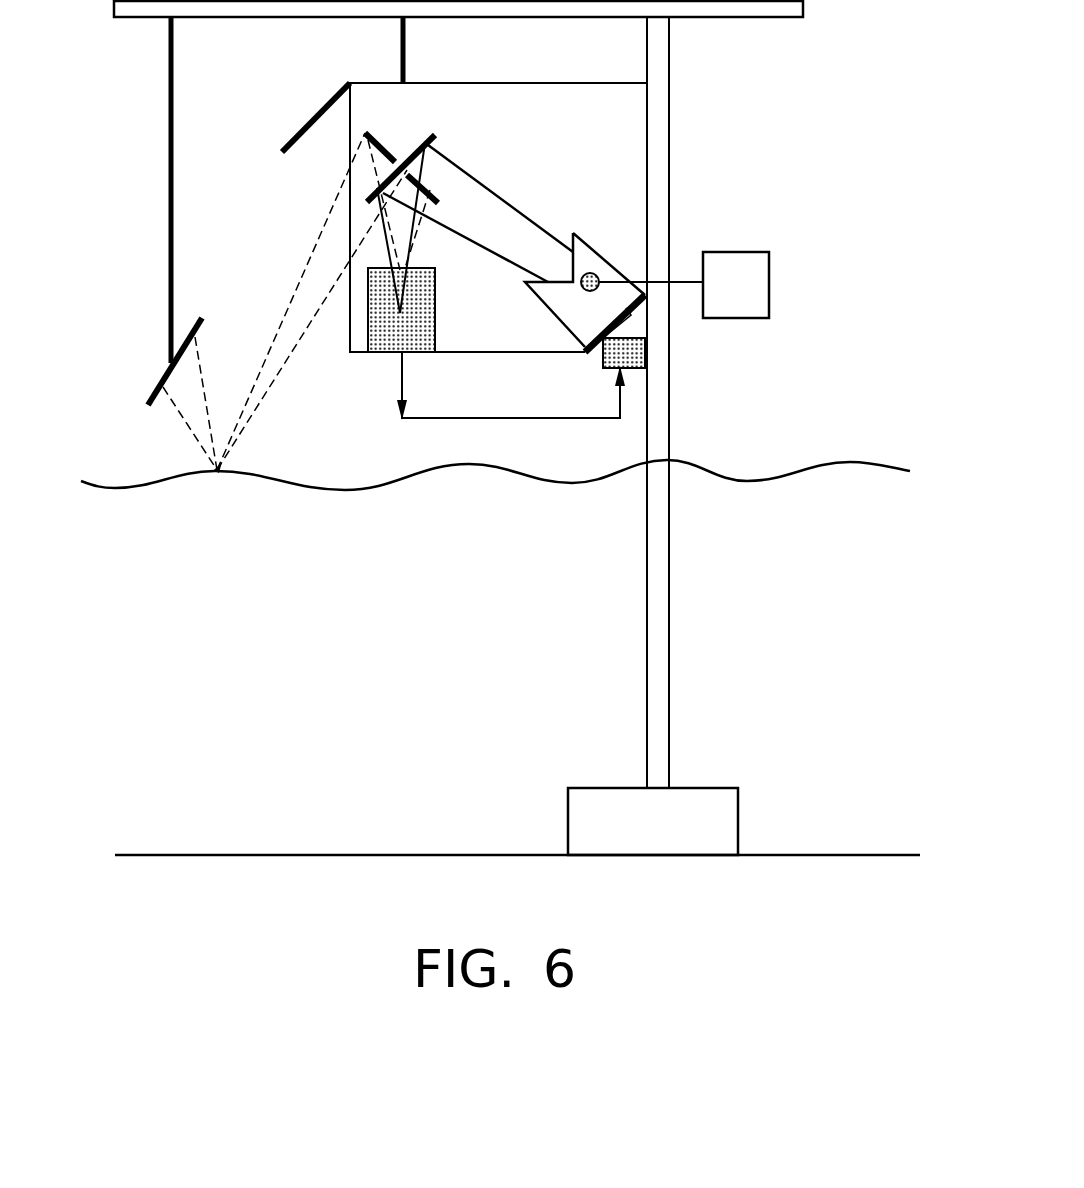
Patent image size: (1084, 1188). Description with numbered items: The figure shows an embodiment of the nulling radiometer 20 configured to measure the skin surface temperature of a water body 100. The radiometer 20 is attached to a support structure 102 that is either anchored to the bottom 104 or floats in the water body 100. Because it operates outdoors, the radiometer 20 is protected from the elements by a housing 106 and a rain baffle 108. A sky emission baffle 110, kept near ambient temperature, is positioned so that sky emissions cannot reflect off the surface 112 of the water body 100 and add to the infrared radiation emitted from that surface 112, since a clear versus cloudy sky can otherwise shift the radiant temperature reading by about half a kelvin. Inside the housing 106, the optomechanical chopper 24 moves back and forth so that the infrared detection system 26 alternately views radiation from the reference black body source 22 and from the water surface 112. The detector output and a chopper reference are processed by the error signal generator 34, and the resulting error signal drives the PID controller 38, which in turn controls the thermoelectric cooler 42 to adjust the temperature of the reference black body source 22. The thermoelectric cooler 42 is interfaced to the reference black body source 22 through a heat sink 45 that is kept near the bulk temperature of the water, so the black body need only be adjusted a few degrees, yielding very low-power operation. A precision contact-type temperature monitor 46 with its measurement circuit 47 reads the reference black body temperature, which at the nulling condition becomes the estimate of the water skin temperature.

The nulling radiometer 20 is at (308, 238).
The reference black body source 22 is at (603, 262).
The optomechanical chopper 24 is at (437, 133).
The infrared detection system 26 is at (437, 312).
The error signal generator 34 is at (575, 370).
The PID controller 38 is at (617, 358).
The thermoelectric cooler 42 is at (632, 322).
The heat sink 45 is at (638, 307).
The temperature monitor 46 is at (588, 272).
The measurement circuit 47 is at (758, 283).
The water body 100 is at (495, 441).
The support structure 102 is at (718, 17).
The bottom 104 is at (812, 855).
The housing 106 is at (440, 83).
The rain baffle 108 is at (308, 123).
The sky emission baffle 110 is at (163, 377).
The surface 112 is at (140, 476).